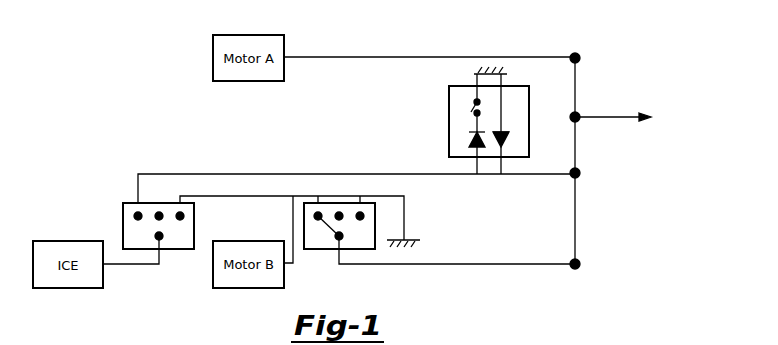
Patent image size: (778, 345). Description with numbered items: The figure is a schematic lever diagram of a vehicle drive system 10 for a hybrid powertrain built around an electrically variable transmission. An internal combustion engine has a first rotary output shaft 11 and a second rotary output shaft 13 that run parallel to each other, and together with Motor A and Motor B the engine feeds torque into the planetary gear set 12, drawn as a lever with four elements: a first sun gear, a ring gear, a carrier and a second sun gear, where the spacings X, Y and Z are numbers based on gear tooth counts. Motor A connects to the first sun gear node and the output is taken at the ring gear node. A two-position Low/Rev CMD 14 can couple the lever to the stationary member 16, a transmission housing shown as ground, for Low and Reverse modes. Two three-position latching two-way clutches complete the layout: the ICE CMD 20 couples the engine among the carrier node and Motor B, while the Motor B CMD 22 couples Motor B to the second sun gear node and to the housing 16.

The vehicle drive system 10 is at (156, 93).
The first rotary output shaft 11 is at (356, 174).
The planetary gear set 12 is at (570, 47).
The second rotary output shaft 13 is at (292, 218).
The Low/Rev CMD 14 is at (449, 141).
The stationary member 16 is at (474, 74).
The ICE CMD 20 is at (175, 250).
The Motor B CMD 22 is at (318, 250).